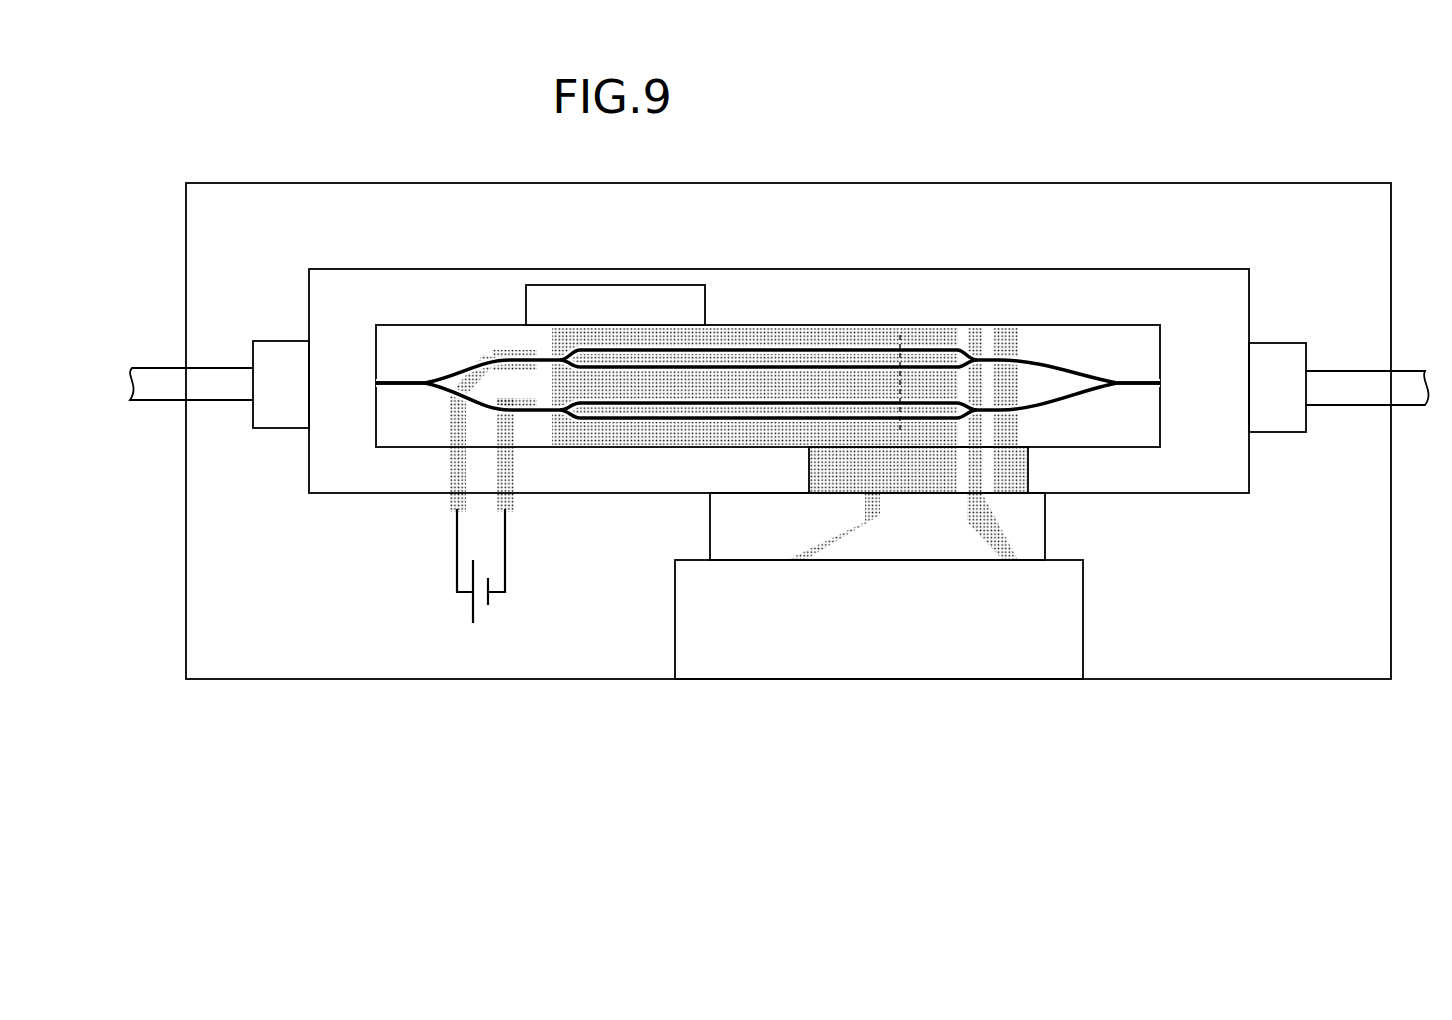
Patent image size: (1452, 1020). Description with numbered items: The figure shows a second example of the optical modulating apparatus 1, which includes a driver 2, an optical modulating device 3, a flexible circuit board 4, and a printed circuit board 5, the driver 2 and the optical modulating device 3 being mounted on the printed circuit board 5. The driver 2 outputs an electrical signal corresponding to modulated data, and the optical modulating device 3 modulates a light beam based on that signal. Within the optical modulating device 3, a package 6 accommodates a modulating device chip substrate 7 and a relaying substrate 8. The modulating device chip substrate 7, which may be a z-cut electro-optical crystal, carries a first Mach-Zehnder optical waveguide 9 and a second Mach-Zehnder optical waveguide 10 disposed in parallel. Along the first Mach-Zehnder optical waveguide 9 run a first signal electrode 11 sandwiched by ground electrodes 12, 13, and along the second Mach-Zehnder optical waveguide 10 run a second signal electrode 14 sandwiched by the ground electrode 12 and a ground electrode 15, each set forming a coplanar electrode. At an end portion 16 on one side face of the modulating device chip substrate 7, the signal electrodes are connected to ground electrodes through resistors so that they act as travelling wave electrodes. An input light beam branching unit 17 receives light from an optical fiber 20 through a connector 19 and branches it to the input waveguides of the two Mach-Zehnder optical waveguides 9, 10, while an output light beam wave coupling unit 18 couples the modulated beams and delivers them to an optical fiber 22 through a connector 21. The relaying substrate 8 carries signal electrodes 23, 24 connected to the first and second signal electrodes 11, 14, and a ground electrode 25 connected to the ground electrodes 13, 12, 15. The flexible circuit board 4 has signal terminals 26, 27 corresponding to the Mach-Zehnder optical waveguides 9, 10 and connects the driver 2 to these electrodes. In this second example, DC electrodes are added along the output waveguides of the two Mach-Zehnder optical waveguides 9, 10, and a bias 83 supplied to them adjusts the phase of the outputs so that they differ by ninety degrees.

The optical modulating apparatus 1 is at (780, 134).
The driver 2 is at (675, 622).
The optical modulating device 3 is at (331, 262).
The flexible circuit board 4 is at (710, 535).
The printed circuit board 5 is at (196, 183).
The package 6 is at (407, 269).
The modulating device chip substrate 7 is at (385, 325).
The relaying substrate 8 is at (1031, 463).
The first Mach-Zehnder optical waveguide 9 is at (838, 345).
The second Mach-Zehnder optical waveguide 10 is at (633, 422).
The first signal electrode 11 is at (673, 330).
The ground electrode 12 is at (636, 330).
The ground electrode 13 is at (763, 330).
The second signal electrode 14 is at (598, 330).
The ground electrode 15 is at (563, 330).
The end portion 16 is at (530, 285).
The input light beam branching unit 17 is at (1162, 382).
The output light beam wave coupling unit 18 is at (376, 381).
The connector 19 is at (1278, 343).
The optical fiber 20 is at (1403, 371).
The connector 21 is at (274, 341).
The optical fiber 22 is at (152, 368).
The signal electrode 23 is at (978, 470).
The signal electrode 24 is at (870, 486).
The ground electrode 25 is at (930, 472).
The signal terminal 26 is at (1005, 540).
The signal terminal 27 is at (792, 546).
The bias 83 is at (472, 612).